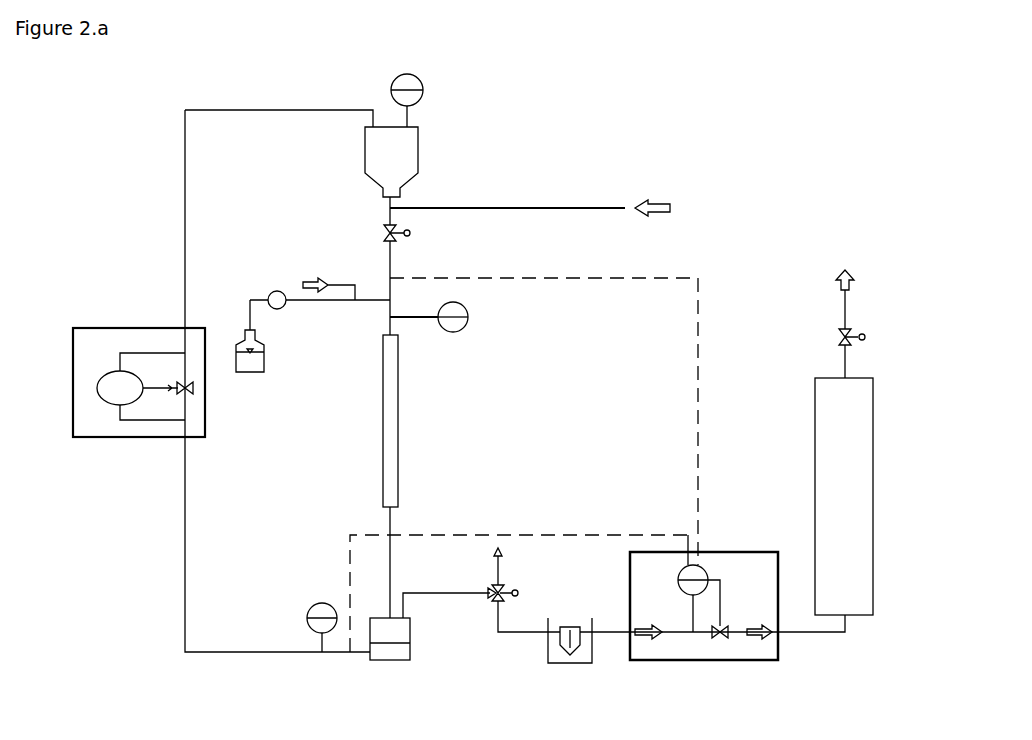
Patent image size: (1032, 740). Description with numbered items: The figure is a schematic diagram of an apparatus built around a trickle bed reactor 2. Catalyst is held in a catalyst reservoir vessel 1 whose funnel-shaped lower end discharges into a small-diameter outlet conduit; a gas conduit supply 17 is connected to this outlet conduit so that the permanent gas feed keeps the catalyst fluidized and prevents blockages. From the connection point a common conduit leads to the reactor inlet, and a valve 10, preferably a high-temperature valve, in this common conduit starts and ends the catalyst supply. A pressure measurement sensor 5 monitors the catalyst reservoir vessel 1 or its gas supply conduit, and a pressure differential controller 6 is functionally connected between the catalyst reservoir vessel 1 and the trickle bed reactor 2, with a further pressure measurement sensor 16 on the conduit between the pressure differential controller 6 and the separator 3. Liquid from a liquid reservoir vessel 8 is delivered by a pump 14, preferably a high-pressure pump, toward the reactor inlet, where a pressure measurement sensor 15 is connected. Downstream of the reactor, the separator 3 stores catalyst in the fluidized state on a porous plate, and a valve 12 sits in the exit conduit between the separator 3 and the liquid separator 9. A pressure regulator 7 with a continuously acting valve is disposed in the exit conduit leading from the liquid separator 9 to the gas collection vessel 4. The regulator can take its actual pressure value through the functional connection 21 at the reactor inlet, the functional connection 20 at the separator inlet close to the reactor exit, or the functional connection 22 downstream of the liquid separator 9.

The catalyst reservoir vessel 1 is at (418, 160).
The trickle bed reactor 2 is at (398, 397).
The separator 3 is at (400, 660).
The gas collection vessel 4 is at (873, 452).
The pressure measurement sensor 5 is at (423, 88).
The pressure differential controller 6 is at (195, 437).
The pressure regulator 7 is at (693, 660).
The liquid reservoir vessel 8 is at (263, 372).
The liquid separator 9 is at (592, 663).
The valve 10 is at (395, 238).
The valve 12 is at (502, 590).
The pump 14 is at (279, 307).
The pressure measurement sensor 15 is at (465, 328).
The pressure measurement sensor 16 is at (307, 618).
The gas conduit supply 17 is at (548, 207).
The functional connection 20 is at (455, 533).
The functional connection 21 is at (700, 467).
The functional connection 22 is at (690, 612).